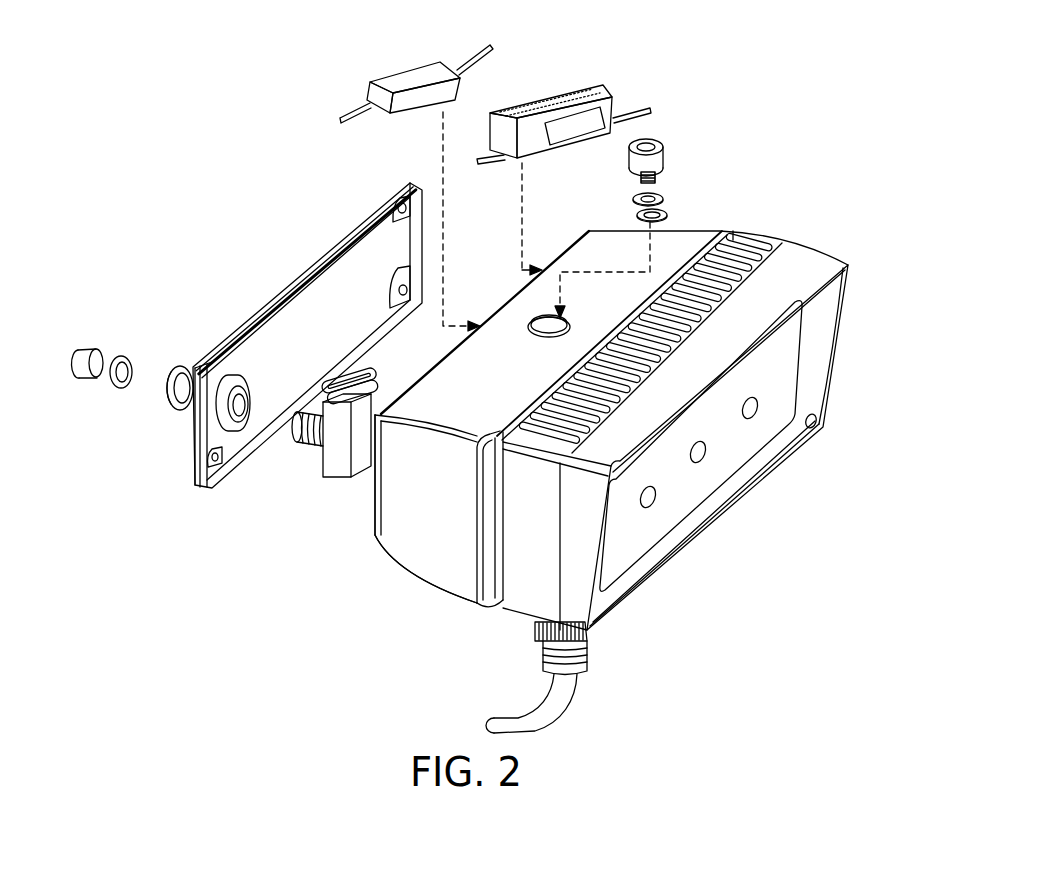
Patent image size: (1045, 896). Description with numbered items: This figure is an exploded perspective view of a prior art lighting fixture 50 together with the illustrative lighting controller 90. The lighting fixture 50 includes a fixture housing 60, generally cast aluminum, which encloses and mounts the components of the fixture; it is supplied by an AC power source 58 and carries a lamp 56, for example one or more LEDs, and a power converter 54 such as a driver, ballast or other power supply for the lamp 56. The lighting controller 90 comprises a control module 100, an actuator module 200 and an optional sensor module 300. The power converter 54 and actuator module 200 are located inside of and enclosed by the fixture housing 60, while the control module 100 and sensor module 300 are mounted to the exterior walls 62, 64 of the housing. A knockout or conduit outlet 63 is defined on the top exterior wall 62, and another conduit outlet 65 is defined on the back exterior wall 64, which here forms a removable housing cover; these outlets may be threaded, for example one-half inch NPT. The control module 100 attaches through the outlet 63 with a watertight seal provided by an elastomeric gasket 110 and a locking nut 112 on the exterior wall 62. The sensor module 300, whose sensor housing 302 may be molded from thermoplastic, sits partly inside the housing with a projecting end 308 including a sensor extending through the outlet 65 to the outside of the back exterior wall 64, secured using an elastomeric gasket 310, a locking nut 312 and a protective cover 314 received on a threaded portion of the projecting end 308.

The lighting fixture 50 is at (858, 244).
The power converter 54 is at (368, 90).
The lamp 56 is at (751, 415).
The AC power source 58 is at (567, 688).
The fixture housing 60 is at (443, 583).
The top exterior wall 62 is at (701, 232).
The conduit outlet 63 is at (540, 314).
The back exterior wall 64 is at (350, 226).
The conduit outlet 65 is at (250, 420).
The lighting controller 90 is at (788, 136).
The control module 100 is at (652, 138).
The elastomeric gasket 110 is at (637, 215).
The locking nut 112 is at (636, 196).
The actuator module 200 is at (608, 92).
The sensor module 300 is at (328, 478).
The sensor housing 302 is at (340, 470).
The projecting end 308 is at (303, 445).
The elastomeric gasket 310 is at (182, 368).
The locking nut 312 is at (125, 355).
The protective cover 314 is at (88, 346).